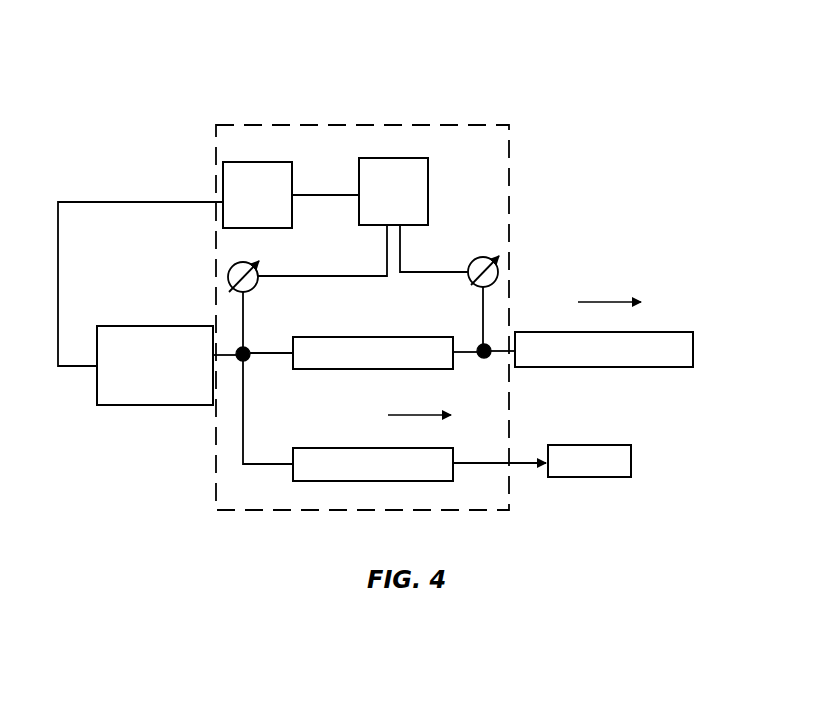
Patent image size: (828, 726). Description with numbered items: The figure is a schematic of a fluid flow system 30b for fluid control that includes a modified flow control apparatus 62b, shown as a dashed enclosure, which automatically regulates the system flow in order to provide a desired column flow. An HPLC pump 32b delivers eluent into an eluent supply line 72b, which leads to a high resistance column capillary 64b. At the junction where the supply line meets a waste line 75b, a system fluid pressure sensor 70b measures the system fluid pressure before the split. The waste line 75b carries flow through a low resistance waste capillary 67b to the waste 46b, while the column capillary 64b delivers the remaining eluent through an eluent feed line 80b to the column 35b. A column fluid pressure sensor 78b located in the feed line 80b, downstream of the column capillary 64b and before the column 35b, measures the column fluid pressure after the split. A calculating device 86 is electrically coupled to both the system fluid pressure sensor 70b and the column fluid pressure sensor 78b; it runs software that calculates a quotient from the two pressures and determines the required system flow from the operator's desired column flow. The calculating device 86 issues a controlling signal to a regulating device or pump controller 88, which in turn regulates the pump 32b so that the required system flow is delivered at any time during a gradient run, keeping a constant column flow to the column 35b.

The fluid flow system 30b is at (537, 108).
The flow control apparatus 62b is at (360, 121).
The pump controller 88 is at (268, 199).
The calculating device 86 is at (402, 197).
The system fluid pressure sensor 70b is at (262, 275).
The column fluid pressure sensor 78b is at (490, 250).
The HPLC pump 32b is at (185, 333).
The eluent supply line 72b is at (270, 350).
The column capillary 64b is at (397, 327).
The eluent feed line 80b is at (461, 347).
The column 35b is at (666, 312).
The waste line 75b is at (247, 403).
The waste capillary 67b is at (412, 435).
The waste line 46b is at (621, 422).